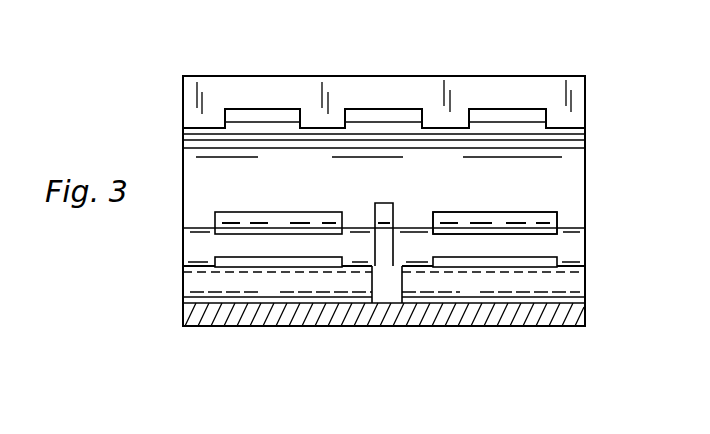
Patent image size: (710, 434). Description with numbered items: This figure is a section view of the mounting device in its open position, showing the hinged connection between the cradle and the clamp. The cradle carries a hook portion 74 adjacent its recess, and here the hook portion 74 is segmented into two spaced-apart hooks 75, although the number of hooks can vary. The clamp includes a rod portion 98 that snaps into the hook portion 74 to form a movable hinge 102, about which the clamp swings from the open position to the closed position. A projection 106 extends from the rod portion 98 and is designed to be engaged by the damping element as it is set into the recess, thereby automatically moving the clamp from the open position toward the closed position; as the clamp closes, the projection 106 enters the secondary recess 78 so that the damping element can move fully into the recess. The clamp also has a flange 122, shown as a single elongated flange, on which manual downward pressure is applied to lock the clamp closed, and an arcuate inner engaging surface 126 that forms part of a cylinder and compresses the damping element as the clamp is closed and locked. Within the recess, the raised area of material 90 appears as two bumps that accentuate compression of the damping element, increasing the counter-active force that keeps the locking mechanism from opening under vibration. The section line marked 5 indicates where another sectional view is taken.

The flange 122 is at (582, 90).
The arcuate inner engaging surface 126 is at (582, 183).
The hook portion 74 is at (563, 217).
The hinge 102 is at (588, 244).
The rod portion 98 is at (190, 247).
The hooks 75 is at (300, 212).
The projection 106 is at (388, 237).
The raised area of material 90 is at (291, 300).
The secondary recess 78 is at (400, 288).
The section line 5- 5 is at (395, 30).